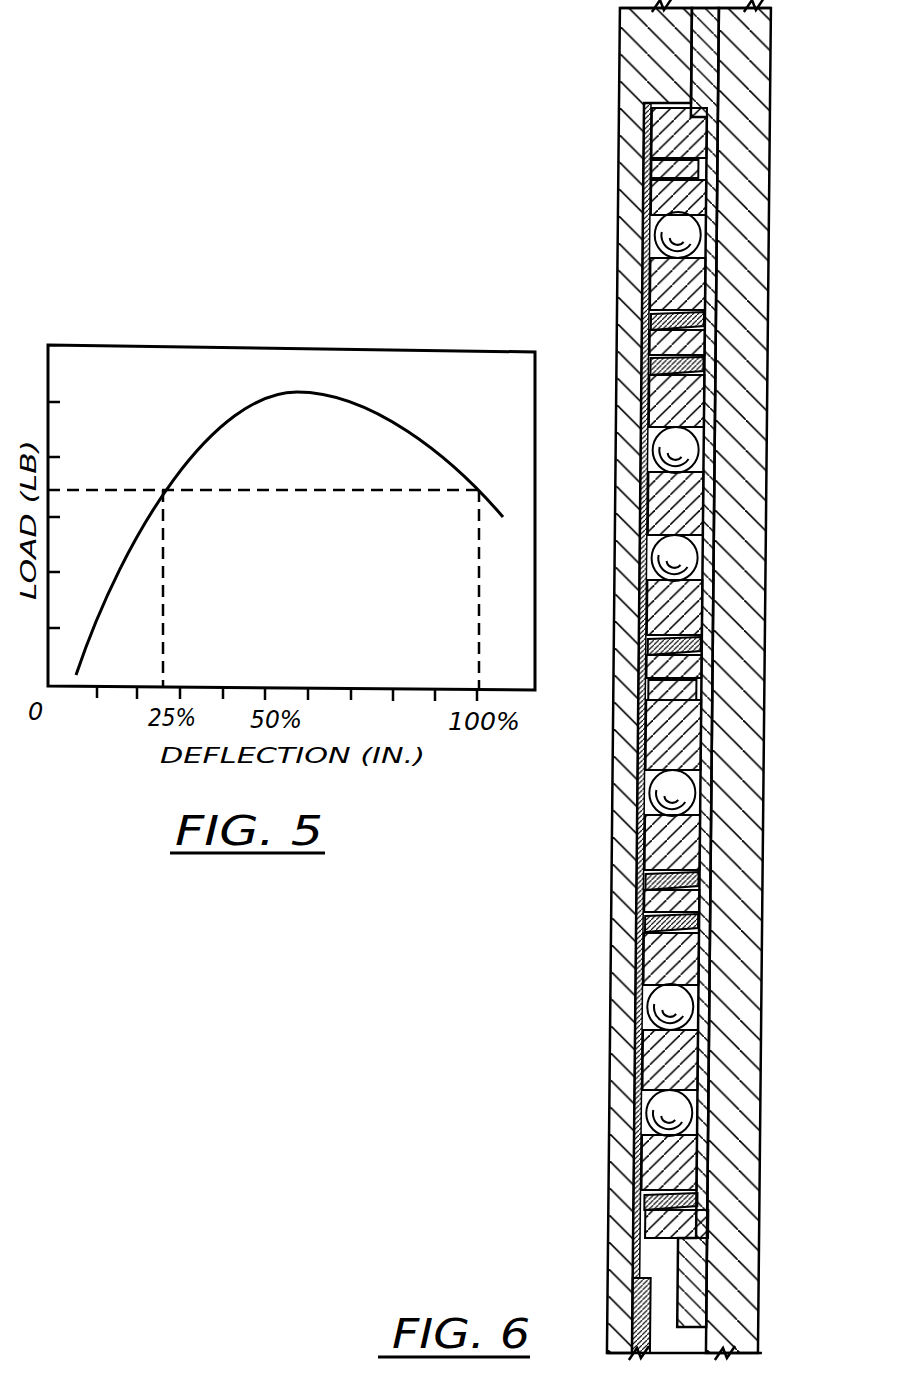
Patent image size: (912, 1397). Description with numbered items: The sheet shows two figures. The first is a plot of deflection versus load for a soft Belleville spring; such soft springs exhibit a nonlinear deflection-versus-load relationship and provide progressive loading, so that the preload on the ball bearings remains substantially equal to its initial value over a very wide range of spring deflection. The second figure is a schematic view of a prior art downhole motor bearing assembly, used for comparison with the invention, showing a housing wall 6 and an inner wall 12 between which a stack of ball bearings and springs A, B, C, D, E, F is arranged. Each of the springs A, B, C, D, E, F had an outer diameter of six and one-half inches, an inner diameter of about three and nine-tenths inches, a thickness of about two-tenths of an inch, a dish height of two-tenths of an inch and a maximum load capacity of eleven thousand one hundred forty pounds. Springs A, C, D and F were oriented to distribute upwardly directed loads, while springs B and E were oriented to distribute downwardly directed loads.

The outer housing 6 is at (640, 78).
The inner wall / mandrel 12 is at (761, 99).
The spring A is at (705, 320).
The spring B is at (705, 364).
The spring C is at (706, 649).
The spring D is at (706, 884).
The spring E is at (706, 920).
The spring F is at (708, 1205).